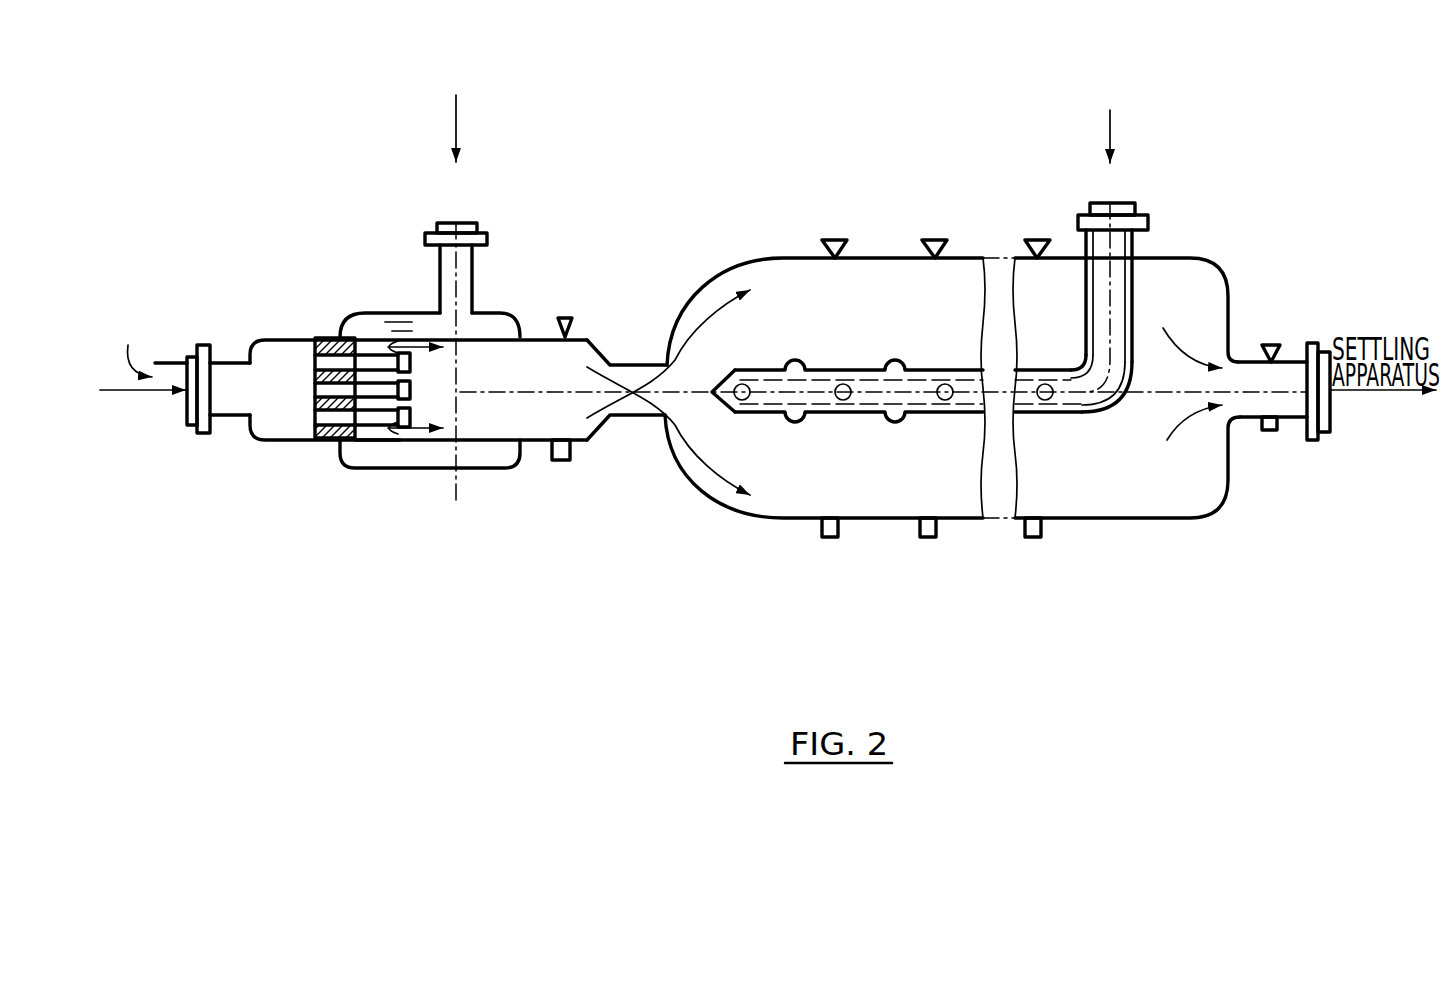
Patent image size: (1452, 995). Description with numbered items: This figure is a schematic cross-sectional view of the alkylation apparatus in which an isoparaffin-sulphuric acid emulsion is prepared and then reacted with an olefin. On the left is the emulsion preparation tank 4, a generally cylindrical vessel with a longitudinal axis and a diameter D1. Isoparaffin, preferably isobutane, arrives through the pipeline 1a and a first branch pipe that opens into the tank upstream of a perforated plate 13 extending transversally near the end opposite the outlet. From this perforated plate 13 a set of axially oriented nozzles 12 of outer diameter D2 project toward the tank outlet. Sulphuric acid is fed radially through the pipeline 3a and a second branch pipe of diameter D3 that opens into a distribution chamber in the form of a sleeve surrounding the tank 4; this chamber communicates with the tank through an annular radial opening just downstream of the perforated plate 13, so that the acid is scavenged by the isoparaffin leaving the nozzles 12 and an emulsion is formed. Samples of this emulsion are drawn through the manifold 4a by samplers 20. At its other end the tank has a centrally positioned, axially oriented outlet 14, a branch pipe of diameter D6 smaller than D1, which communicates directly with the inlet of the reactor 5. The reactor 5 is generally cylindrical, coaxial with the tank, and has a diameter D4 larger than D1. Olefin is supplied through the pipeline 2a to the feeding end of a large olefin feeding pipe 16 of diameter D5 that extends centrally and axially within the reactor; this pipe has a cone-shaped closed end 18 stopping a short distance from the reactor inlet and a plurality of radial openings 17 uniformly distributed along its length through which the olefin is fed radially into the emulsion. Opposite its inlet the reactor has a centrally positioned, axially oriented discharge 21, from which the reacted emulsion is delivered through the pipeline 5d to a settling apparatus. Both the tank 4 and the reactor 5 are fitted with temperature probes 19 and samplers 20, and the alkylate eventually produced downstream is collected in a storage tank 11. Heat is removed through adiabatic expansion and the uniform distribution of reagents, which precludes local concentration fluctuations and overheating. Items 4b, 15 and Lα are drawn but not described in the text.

The isoparaffin pipeline 1a is at (172, 427).
The olefin pipeline 2a is at (1142, 192).
The sulphuric acid pipeline 3a is at (505, 207).
The emulsion preparation tank 4 is at (437, 433).
The sampling manifold 4a is at (497, 470).
The bottom plate of distribution chamber 4b is at (383, 440).
The reactor 5 is at (1147, 536).
The emulsion discharge pipeline 5d is at (1330, 418).
The storage tank 11 is at (247, 415).
The axially oriented nozzles 12 is at (392, 410).
The perforated plate 13 is at (383, 316).
The tank outlet 14 is at (665, 415).
The reaction section 15 is at (1228, 518).
The olefin feeding pipe 16 is at (710, 392).
The radial openings 17 is at (1040, 386).
The closed end 18 is at (712, 394).
The temperature probes 19 is at (482, 263).
The samplers 20 is at (564, 462).
The reactor discharge 21 is at (1297, 370).
The tank diameter D1 is at (282, 340).
The nozzle outer diameter D2 is at (425, 425).
The second branch pipe diameter D3 is at (520, 295).
The reactor diameter D4 is at (795, 518).
The feeding pipe diameter D5 is at (862, 467).
The outlet diameter D6 is at (645, 460).